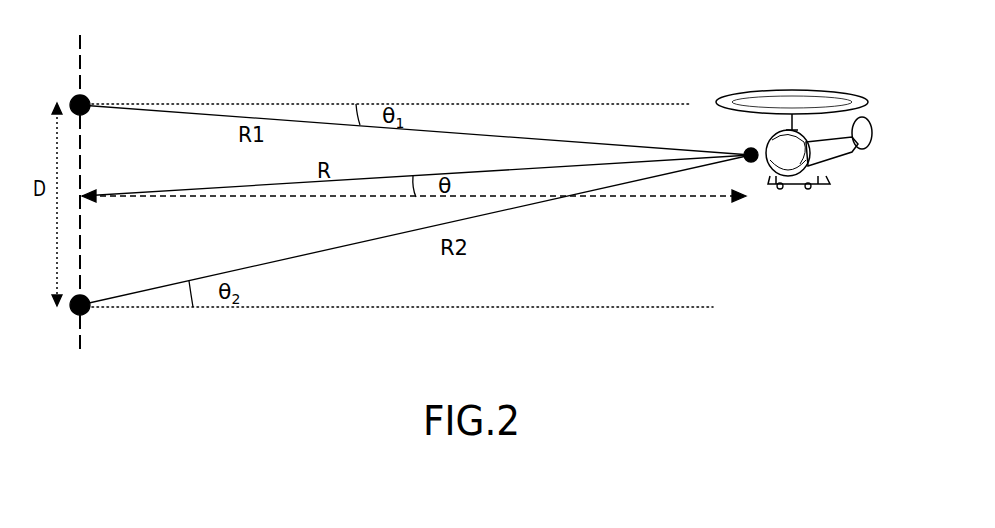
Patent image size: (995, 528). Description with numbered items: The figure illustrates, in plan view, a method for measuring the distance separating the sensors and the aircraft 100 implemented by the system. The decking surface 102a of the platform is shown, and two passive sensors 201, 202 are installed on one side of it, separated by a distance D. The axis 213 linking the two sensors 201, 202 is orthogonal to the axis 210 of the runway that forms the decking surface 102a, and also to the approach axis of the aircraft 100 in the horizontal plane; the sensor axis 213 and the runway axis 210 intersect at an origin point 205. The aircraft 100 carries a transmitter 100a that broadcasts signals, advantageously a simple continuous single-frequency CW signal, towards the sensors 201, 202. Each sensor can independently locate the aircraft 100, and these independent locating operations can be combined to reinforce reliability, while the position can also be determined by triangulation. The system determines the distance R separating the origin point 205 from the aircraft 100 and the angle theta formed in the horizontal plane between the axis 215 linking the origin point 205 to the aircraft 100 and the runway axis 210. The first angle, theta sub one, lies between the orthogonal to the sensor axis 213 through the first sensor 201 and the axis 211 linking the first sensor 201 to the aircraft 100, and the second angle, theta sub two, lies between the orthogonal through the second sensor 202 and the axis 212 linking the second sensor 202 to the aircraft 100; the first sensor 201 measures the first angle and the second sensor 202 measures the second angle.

The axis linking the two sensors 213 is at (84, 45).
The first sensor 201 is at (89, 97).
The origin point 205 is at (84, 193).
The second sensor 202 is at (90, 297).
The decking surface 102a is at (614, 284).
The axis of the runway 210 is at (632, 199).
The axis linking the first sensor to the aircraft 211 is at (572, 140).
The axis linking the origin point to the aircraft 215 is at (370, 177).
The axis linking the second sensor to the aircraft 212 is at (348, 250).
The transmitter 100a is at (751, 163).
The aircraft 100 is at (850, 162).